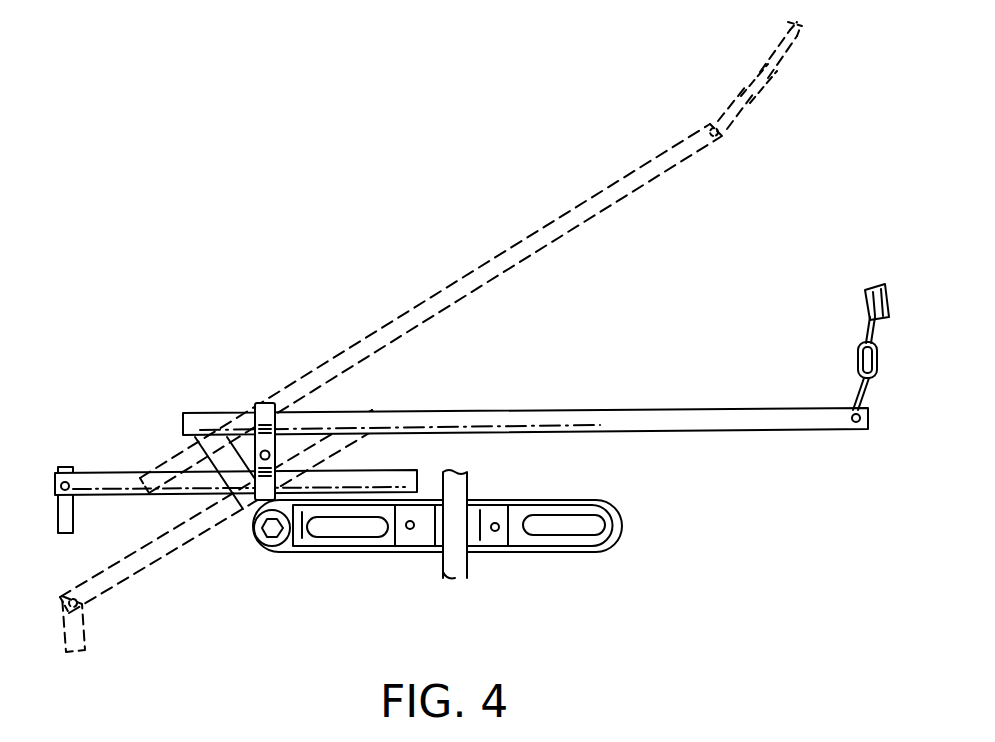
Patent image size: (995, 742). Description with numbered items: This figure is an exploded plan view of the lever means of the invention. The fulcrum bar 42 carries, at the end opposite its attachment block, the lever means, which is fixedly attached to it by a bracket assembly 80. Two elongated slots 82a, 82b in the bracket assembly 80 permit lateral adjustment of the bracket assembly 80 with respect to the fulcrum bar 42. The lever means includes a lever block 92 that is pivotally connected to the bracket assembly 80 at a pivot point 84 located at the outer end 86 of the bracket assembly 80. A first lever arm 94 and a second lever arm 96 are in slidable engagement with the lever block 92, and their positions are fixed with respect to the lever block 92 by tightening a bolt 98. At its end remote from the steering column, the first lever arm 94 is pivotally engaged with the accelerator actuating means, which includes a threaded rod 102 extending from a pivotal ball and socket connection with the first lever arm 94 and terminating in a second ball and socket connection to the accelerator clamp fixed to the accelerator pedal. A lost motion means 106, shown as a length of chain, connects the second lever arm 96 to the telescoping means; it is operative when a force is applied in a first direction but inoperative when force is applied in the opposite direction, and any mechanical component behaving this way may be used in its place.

The fulcrum bar 42 is at (462, 492).
The bracket assembly 80 is at (487, 540).
The elongated slot 82a is at (310, 535).
The elongated slot 82b is at (572, 528).
The pivot point 84 is at (273, 540).
The outer end 86 is at (253, 537).
The lever block 92 is at (267, 405).
The first lever arm 94 is at (124, 478).
The second lever arm 96 is at (517, 247).
The bolt 98 is at (270, 452).
The threaded rod 102 is at (68, 516).
The lost motion means 106 is at (746, 80).